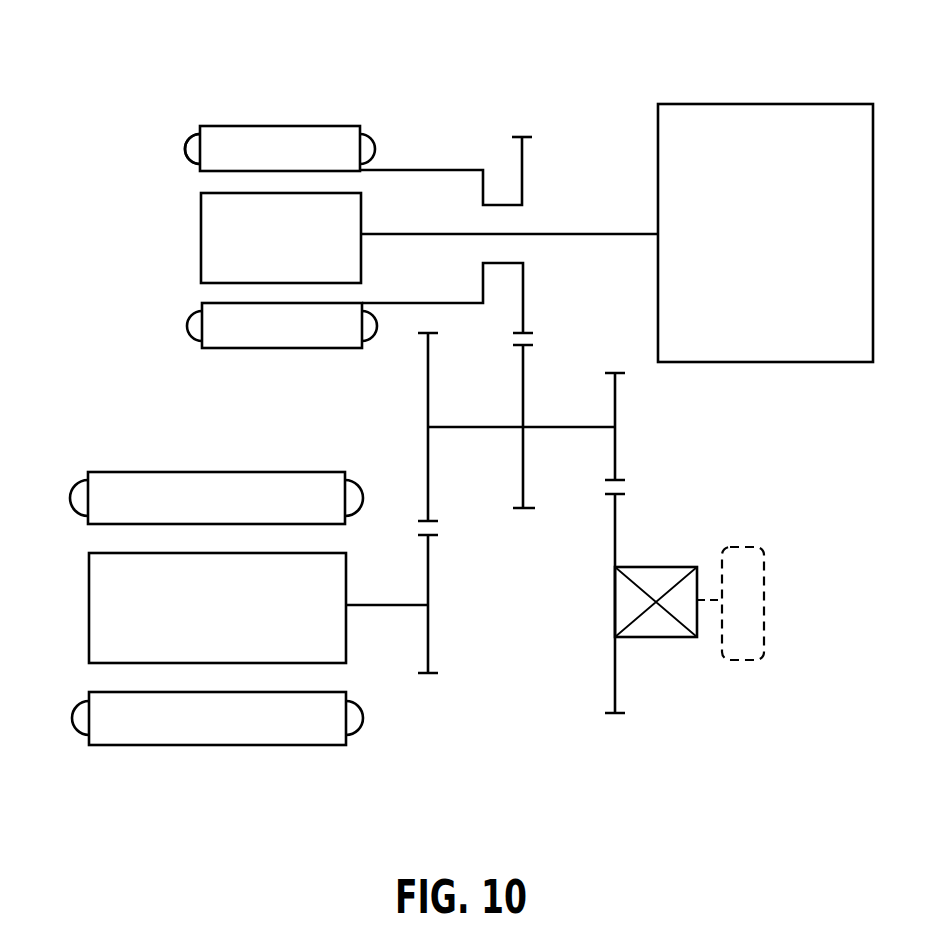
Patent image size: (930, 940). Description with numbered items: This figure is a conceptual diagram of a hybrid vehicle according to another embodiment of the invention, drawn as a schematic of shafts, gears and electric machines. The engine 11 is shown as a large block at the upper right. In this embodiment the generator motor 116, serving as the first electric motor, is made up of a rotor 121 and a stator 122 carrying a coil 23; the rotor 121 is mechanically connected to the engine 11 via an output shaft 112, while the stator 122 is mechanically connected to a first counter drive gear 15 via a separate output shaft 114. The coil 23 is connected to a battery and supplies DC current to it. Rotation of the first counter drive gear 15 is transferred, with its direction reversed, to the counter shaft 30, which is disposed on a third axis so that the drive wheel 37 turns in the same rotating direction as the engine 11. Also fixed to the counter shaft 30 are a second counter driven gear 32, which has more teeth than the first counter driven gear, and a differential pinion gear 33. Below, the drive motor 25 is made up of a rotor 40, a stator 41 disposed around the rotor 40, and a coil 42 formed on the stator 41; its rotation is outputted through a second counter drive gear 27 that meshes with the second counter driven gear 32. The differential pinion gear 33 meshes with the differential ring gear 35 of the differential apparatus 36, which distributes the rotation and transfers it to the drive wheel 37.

The engine 11 is at (790, 103).
The output shaft 112 is at (583, 230).
The output shaft 114 is at (430, 165).
The first counter drive gear 15 is at (527, 135).
The generator motor 116 is at (256, 182).
The rotor 121 is at (215, 228).
The stator 122 is at (235, 143).
The coil 23 is at (185, 151).
The second counter driven gear 32 is at (419, 336).
The counter shaft 30 is at (480, 425).
The differential pinion gear 33 is at (617, 368).
The differential ring gear 35 is at (612, 497).
The differential apparatus 36 is at (653, 549).
The drive wheel 37 is at (763, 550).
The drive motor 25 is at (192, 626).
The rotor 40 is at (100, 600).
The stator 41 is at (119, 478).
The coil 42 is at (72, 495).
The second counter drive gear 27 is at (428, 677).